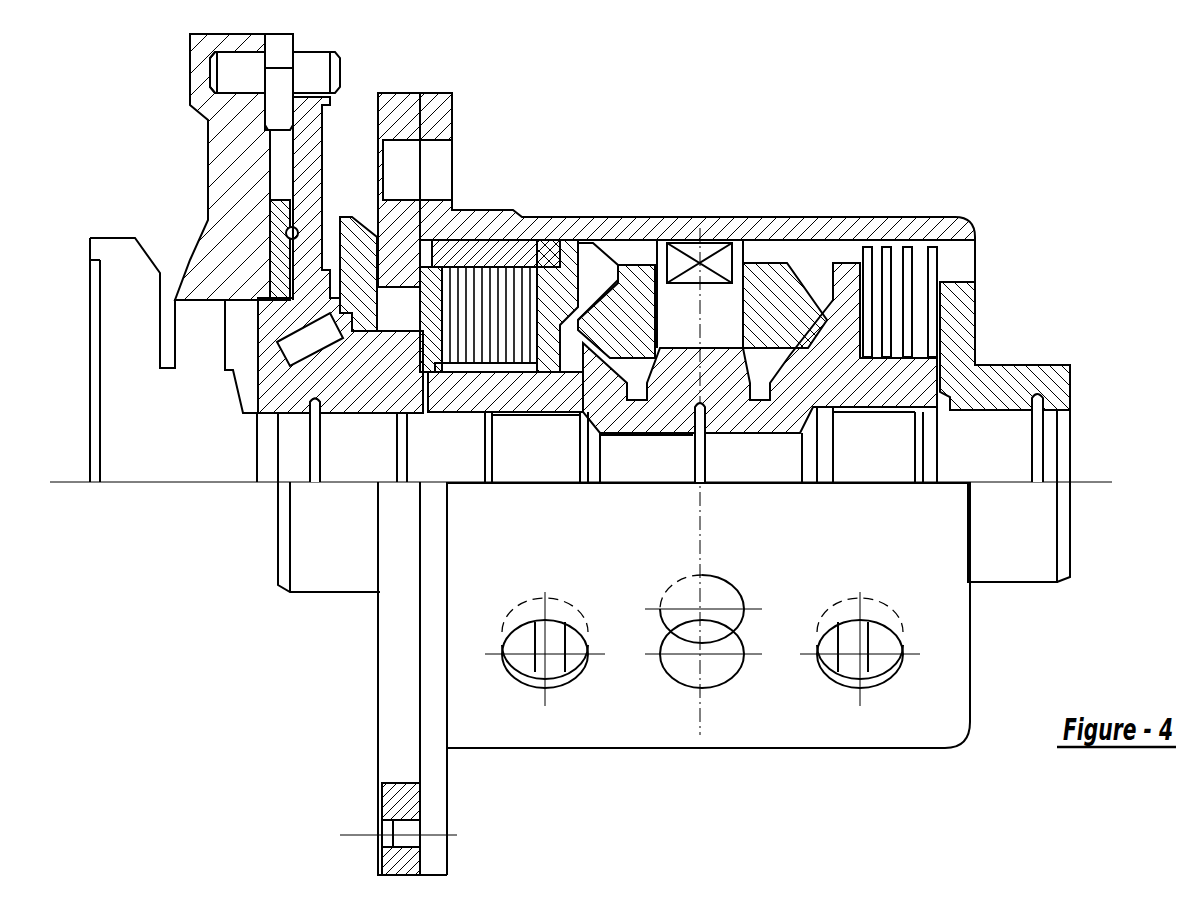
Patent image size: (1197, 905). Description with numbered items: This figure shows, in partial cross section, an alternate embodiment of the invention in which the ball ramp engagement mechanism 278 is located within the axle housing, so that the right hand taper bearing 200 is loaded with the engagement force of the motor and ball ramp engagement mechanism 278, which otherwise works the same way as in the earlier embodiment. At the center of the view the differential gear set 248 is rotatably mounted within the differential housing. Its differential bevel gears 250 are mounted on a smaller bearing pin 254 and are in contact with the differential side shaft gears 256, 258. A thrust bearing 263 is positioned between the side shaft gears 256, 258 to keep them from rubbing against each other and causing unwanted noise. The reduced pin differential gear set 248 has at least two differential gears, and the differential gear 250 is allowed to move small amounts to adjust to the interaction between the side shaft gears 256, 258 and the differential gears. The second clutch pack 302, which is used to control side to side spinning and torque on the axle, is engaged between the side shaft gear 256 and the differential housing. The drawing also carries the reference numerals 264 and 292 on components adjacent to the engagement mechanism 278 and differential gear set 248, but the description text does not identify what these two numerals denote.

The right hand taper bearing 200 is at (297, 347).
The differential gear set 248 is at (813, 302).
The differential bevel gear 250 is at (633, 312).
The bearing pin 254 is at (718, 302).
The differential side shaft gear 256 is at (830, 353).
The differential side shaft gear 258 is at (603, 392).
The thrust bearing 263 is at (700, 420).
The spring 264 is at (480, 330).
The ball ramp engagement mechanism 278 is at (365, 55).
The cover plate 292 is at (605, 235).
The second clutch pack 302 is at (905, 275).